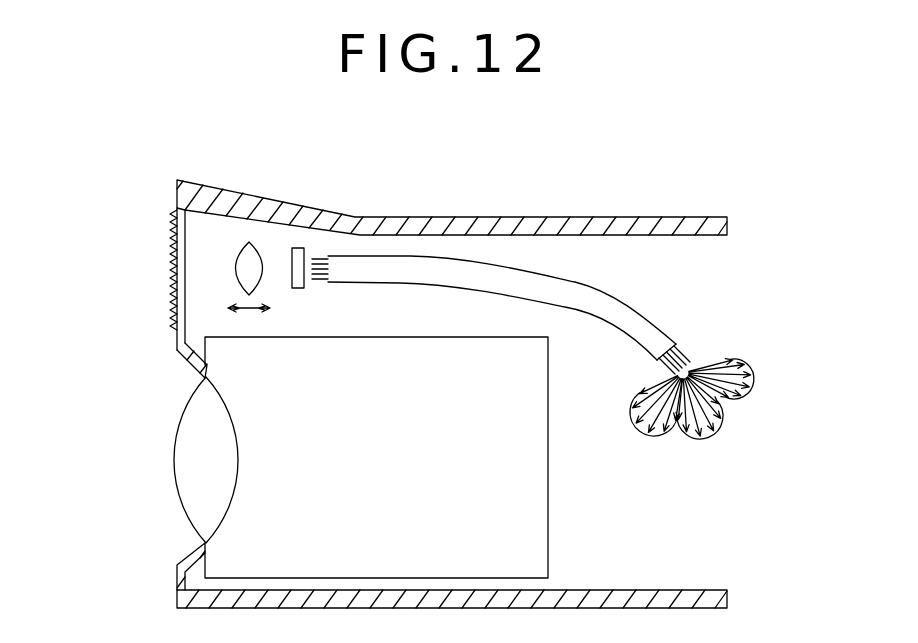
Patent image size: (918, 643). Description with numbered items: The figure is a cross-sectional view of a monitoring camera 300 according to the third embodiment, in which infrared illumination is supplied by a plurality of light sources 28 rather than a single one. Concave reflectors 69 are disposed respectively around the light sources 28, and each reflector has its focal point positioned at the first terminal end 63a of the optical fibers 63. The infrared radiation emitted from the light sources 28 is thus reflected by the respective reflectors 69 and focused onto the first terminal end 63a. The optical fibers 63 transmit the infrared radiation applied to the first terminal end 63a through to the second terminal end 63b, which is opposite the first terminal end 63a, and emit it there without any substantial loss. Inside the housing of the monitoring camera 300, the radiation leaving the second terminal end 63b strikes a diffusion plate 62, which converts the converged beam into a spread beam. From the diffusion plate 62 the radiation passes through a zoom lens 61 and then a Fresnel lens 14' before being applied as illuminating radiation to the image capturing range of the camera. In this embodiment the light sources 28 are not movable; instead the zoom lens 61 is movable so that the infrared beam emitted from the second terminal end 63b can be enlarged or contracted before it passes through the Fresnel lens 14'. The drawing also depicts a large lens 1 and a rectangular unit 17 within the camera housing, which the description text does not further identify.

The monitoring camera 300 is at (569, 198).
The Fresnel lens 14' is at (140, 270).
The objective lens 1 is at (193, 448).
The image sensor unit 17 is at (533, 533).
The zoom lens 61 is at (248, 241).
The diffusion plate 62 is at (297, 247).
The second terminal end 63b is at (313, 257).
The optical fibers 63 is at (647, 311).
The first terminal end 63a is at (683, 357).
The light sources 28 is at (710, 437).
The concave reflectors 69 is at (754, 377).